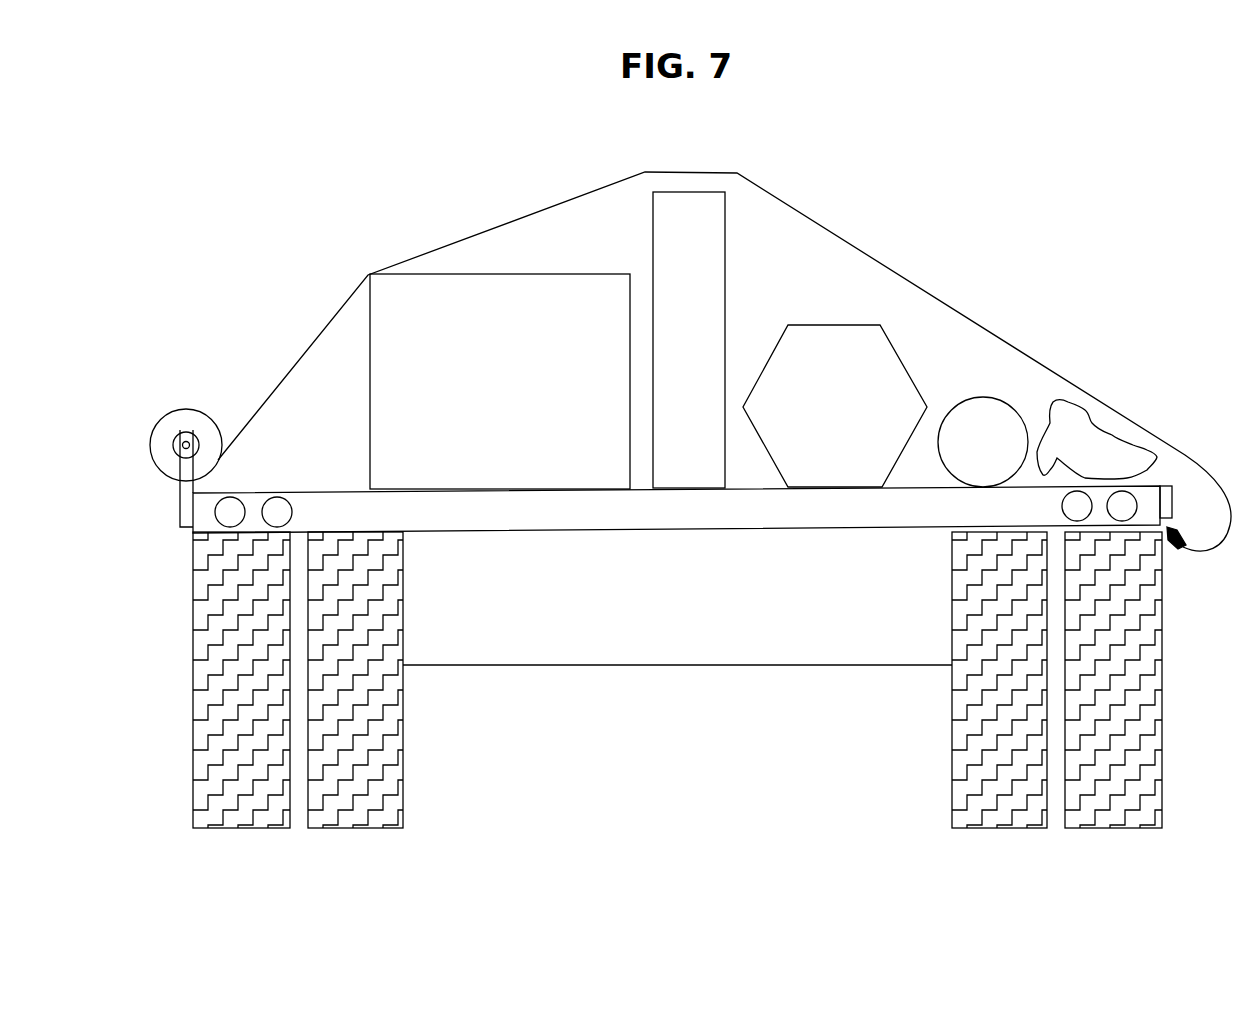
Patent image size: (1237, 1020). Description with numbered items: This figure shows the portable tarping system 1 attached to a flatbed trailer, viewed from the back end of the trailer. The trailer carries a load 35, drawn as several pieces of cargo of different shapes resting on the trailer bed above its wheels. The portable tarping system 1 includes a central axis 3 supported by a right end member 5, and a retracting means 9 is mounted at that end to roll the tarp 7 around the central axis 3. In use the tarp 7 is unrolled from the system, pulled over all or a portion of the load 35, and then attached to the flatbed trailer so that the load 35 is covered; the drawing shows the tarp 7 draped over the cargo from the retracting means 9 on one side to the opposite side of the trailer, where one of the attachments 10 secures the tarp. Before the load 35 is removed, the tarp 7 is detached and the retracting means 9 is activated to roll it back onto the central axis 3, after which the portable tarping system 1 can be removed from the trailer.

The portable tarping system 1 is at (674, 627).
The central axis 3 is at (178, 448).
The right end member 5 is at (185, 488).
The tarp 7 is at (938, 290).
The retracting means 9 is at (175, 438).
The attachments 10 is at (1178, 548).
The load 35 is at (763, 340).